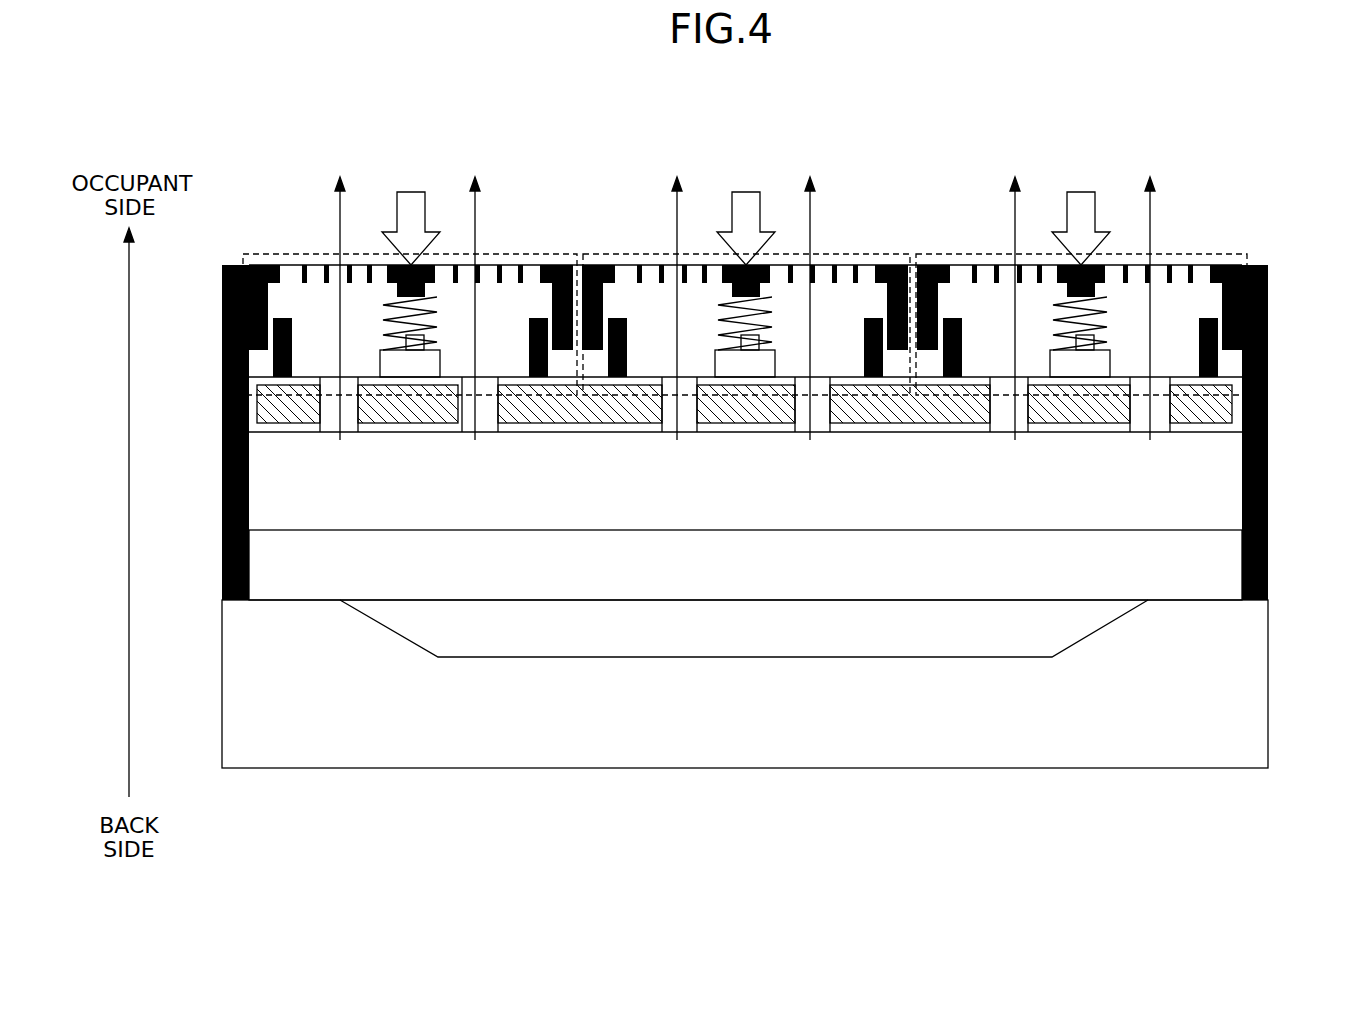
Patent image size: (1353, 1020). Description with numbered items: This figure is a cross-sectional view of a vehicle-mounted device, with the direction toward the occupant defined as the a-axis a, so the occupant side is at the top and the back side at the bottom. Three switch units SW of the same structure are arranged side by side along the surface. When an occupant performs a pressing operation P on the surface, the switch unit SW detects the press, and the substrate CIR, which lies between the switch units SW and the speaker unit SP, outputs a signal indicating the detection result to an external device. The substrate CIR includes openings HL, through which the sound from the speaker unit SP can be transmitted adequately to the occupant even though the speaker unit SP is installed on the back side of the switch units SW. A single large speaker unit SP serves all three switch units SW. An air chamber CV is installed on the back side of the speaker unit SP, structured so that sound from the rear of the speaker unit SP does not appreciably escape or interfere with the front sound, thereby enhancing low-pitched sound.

The pressing operation P is at (411, 192).
The switch unit SW is at (530, 254).
The opening HL is at (353, 433).
The substrate CIR is at (1244, 400).
The speaker unit SP is at (1212, 564).
The air chamber CV is at (748, 748).
The a-axis a is at (128, 511).